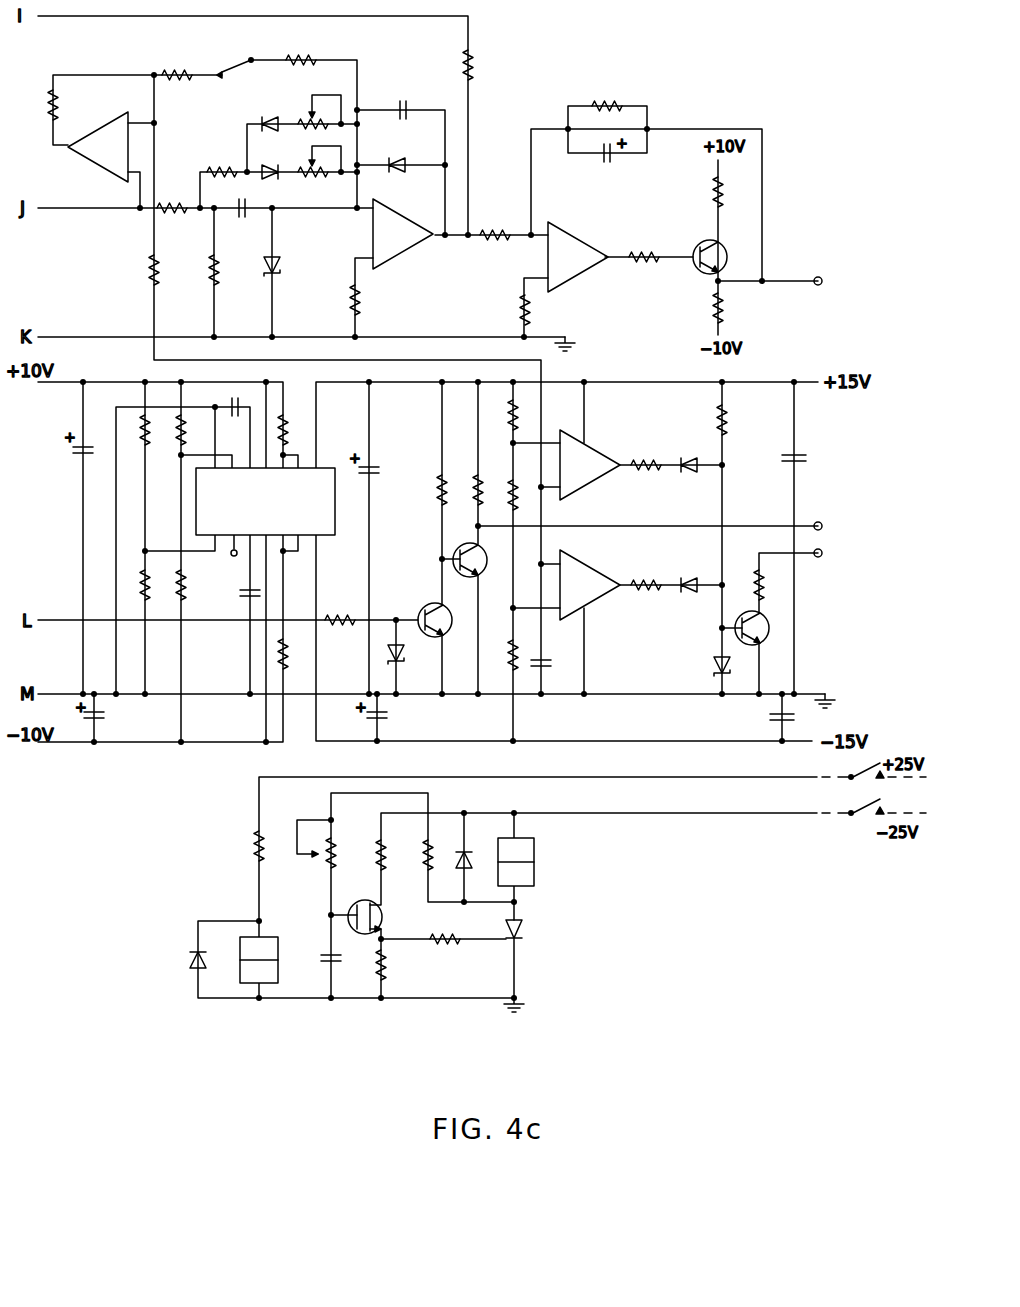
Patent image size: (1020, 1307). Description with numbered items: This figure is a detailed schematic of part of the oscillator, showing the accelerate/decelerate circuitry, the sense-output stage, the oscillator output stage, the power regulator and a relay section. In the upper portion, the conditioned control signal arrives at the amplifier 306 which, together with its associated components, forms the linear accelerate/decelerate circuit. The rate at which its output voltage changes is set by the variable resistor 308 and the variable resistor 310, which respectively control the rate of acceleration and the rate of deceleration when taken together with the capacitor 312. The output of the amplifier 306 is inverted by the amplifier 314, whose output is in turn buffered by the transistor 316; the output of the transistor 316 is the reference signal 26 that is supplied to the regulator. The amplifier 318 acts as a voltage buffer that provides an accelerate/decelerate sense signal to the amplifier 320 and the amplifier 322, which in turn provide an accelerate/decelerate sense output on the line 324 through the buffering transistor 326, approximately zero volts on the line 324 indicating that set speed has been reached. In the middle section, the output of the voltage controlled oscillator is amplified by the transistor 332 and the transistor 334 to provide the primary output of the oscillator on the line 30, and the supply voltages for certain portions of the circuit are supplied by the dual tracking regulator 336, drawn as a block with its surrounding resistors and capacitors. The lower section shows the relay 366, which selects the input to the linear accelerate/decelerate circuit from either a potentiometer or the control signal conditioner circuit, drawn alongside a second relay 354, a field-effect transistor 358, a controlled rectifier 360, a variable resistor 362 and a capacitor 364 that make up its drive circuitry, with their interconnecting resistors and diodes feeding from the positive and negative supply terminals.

The reference signal 26 is at (831, 282).
The line 30 is at (831, 527).
The amplifier 306 is at (407, 246).
The variable resistor 308 is at (310, 102).
The variable resistor 310 is at (320, 180).
The capacitor 312 is at (403, 100).
The amplifier 314 is at (578, 264).
The transistor 316 is at (720, 255).
The amplifier 318 is at (100, 160).
The amplifier 320 is at (595, 476).
The amplifier 322 is at (598, 592).
The accelerate/decelerate sense output line 324 is at (836, 554).
The buffering transistor 326 is at (764, 632).
The transistor 332 is at (437, 603).
The transistor 334 is at (480, 574).
The dual tracking regulator 336 is at (265, 501).
The relay 354 is at (528, 855).
The field effect transistor 358 is at (385, 917).
The silicon controlled rectifier 360 is at (522, 934).
The potentiometer 362 is at (336, 862).
The capacitor 364 is at (320, 962).
The relay 366 is at (266, 953).